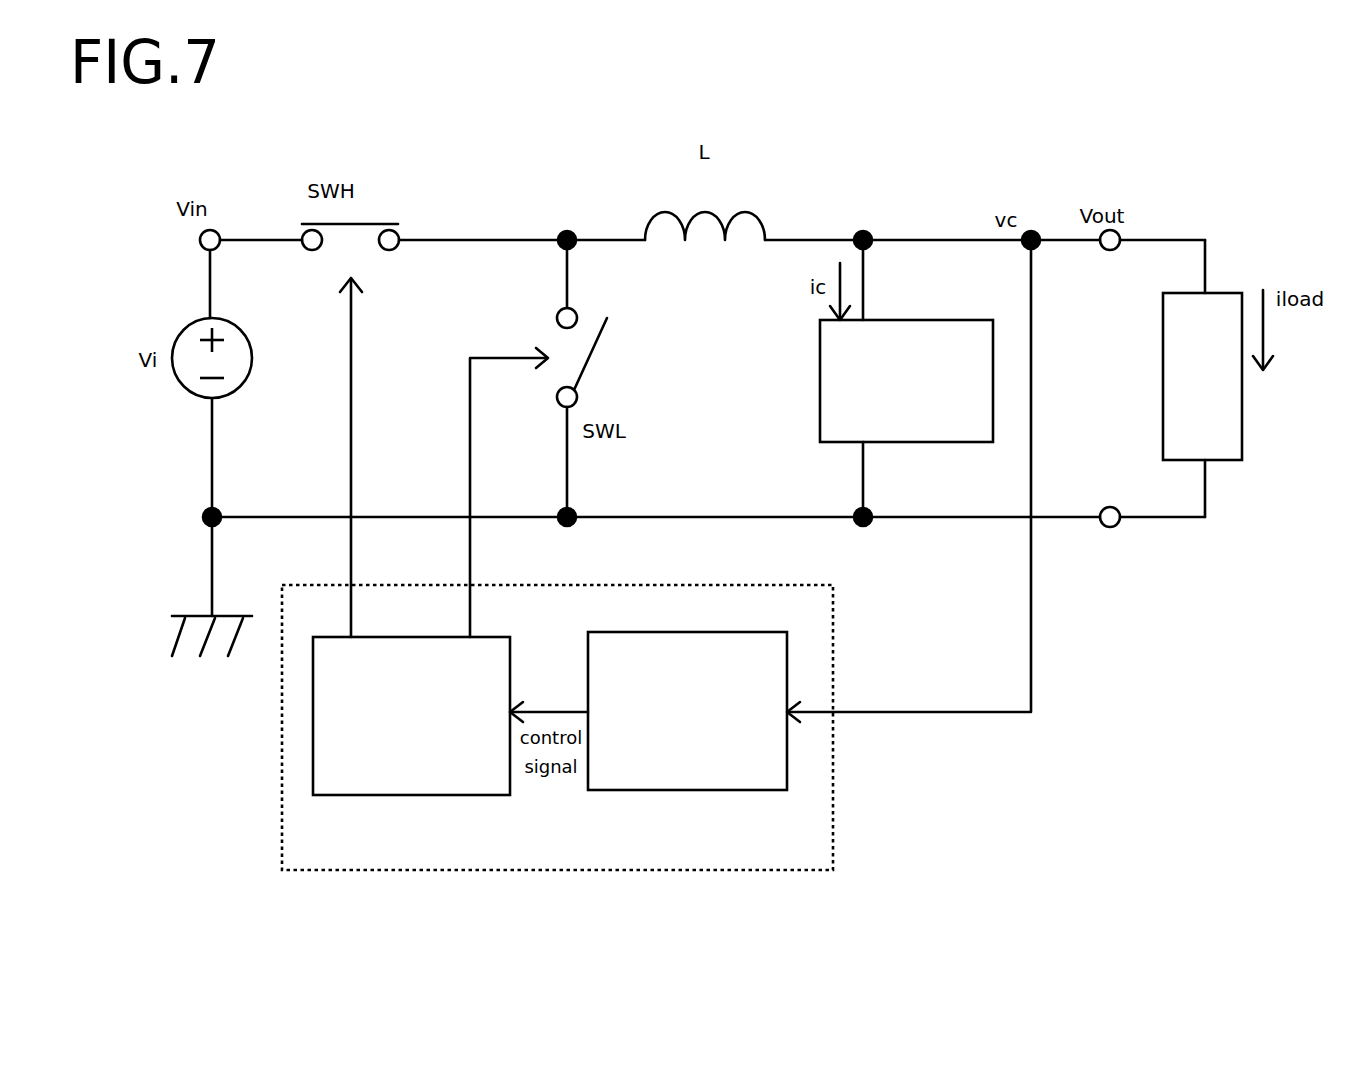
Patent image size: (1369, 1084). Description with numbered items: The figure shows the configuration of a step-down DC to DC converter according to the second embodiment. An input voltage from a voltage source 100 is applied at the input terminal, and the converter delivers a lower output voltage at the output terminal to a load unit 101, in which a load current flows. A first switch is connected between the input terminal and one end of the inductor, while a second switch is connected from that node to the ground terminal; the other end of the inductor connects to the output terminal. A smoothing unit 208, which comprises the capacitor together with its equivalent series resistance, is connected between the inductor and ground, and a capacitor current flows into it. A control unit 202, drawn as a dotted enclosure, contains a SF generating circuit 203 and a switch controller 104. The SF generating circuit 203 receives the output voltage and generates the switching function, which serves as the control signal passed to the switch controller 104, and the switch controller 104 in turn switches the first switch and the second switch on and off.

The voltage source 100 is at (180, 386).
The load unit 101 is at (1163, 404).
The switch controller 104 is at (407, 795).
The control unit 202 is at (550, 870).
The SF generating circuit 203 is at (636, 790).
The smoothing unit 208 is at (820, 406).